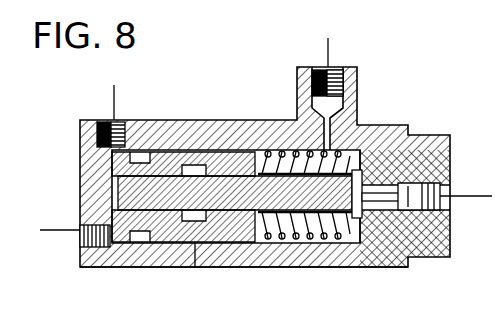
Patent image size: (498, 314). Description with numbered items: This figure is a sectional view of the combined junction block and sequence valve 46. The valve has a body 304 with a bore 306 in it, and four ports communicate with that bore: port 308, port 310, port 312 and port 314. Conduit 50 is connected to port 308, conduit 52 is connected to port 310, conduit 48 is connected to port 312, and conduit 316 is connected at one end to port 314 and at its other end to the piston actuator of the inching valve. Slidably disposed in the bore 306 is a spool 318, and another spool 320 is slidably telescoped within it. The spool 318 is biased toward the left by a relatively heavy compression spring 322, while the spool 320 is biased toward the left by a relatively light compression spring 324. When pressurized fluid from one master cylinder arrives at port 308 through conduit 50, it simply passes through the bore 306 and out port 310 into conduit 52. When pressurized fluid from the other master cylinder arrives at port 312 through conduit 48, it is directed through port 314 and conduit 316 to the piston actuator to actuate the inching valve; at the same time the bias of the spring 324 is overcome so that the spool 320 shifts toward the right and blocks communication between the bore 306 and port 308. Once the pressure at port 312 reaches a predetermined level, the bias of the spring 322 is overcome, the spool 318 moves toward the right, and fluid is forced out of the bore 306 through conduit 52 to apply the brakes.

The combined junction block and sequence valve 46 is at (177, 110).
The conduit 48 is at (52, 230).
The conduit 50 is at (470, 196).
The conduit 52 is at (330, 54).
The body 304 is at (132, 265).
The bore 306 is at (316, 243).
The port 308 is at (438, 210).
The port 310 is at (324, 70).
The port 312 is at (80, 225).
The port 314 is at (82, 126).
The conduit 316 is at (112, 90).
The spool 318 is at (196, 148).
The spool 320 is at (200, 262).
The compression spring 322 is at (274, 148).
The compression spring 324 is at (274, 243).